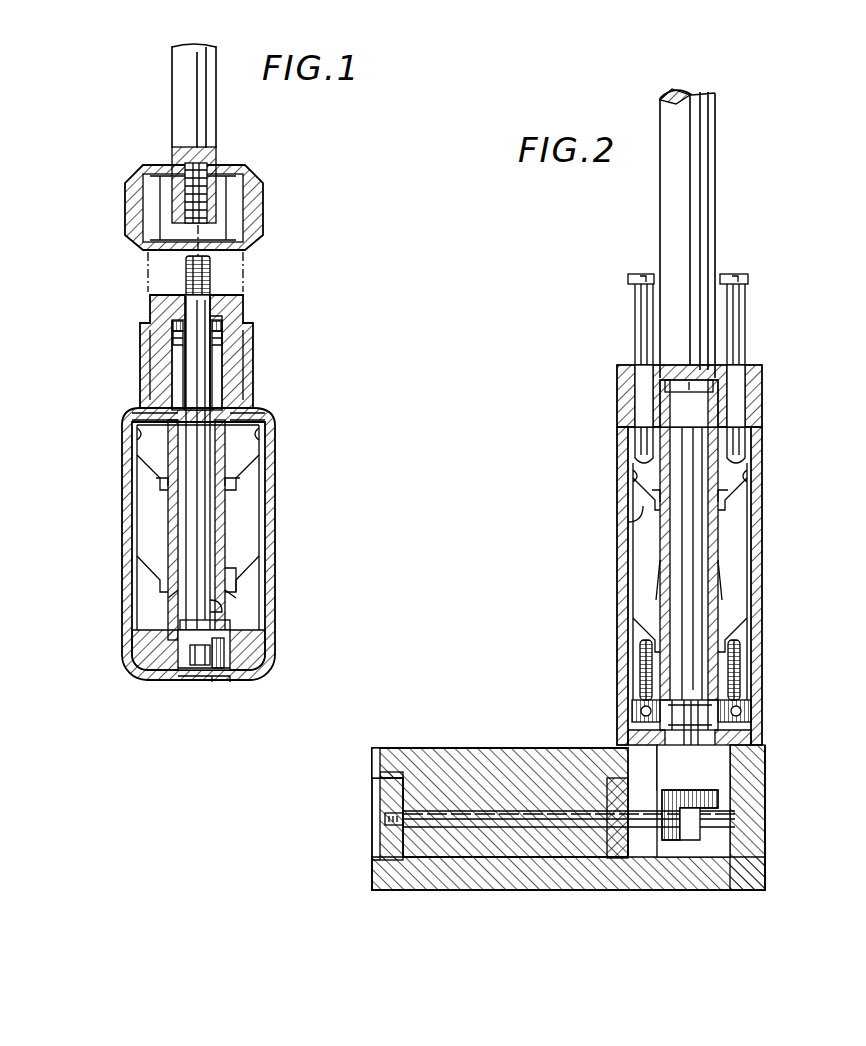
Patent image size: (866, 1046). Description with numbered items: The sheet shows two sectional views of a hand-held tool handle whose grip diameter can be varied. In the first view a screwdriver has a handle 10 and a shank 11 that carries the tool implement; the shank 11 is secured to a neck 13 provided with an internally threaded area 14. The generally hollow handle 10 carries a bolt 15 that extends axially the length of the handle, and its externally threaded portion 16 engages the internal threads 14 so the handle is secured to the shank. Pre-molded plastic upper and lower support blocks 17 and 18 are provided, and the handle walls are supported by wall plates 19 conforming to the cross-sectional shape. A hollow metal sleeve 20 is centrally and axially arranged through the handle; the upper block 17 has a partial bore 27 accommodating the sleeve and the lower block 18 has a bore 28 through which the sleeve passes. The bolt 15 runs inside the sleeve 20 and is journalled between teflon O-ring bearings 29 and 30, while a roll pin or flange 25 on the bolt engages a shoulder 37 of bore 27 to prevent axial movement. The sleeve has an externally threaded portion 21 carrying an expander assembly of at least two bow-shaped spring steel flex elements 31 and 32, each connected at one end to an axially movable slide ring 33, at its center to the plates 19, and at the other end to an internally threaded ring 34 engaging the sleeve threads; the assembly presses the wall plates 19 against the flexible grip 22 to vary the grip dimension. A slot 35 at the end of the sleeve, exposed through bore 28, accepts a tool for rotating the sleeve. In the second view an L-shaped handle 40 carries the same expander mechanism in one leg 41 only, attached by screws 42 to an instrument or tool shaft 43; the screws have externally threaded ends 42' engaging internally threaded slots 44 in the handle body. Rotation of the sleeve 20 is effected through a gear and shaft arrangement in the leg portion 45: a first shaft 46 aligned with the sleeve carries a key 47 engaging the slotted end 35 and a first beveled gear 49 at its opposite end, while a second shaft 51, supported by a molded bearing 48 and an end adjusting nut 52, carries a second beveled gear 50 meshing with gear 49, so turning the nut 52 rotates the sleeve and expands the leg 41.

In FIG. 1, the handle 10 is at (318, 369).
In FIG. 1, the shank 11 is at (188, 88).
In FIG. 1, the neck 13 is at (258, 205).
In FIG. 1, the internally threaded area 14 is at (208, 160).
In FIG. 1, the bolt 15 is at (200, 542).
In FIG. 1, the externally threaded portion 16 is at (210, 280).
In FIG. 1, the upper support block 17 is at (160, 378).
In FIG. 1, the lower support block 18 is at (255, 650).
In FIG. 1, the wall plates 19 is at (142, 428).
In FIG. 2, the wall plates 19 is at (640, 472).
In FIG. 1, the hollow metal sleeve 20 is at (170, 492).
In FIG. 2, the hollow metal sleeve 20 is at (720, 532).
In FIG. 1, the externally threaded portion 21 is at (168, 598).
In FIG. 2, the externally threaded portion 21 is at (720, 578).
In FIG. 1, the flexible grip 22 is at (130, 468).
In FIG. 2, the flexible grip 22 is at (764, 385).
In FIG. 1, the roll pin or flange 25 is at (178, 322).
In FIG. 1, the partial bore 27 is at (178, 336).
In FIG. 1, the bore 28 is at (222, 670).
In FIG. 1, the teflon O-ring bearing 29 is at (262, 432).
In FIG. 1, the teflon O-ring bearing 30 is at (236, 614).
In FIG. 1, the flex element 31 is at (170, 580).
In FIG. 2, the flex element 31 is at (650, 506).
In FIG. 1, the flex element 32 is at (258, 352).
In FIG. 2, the flex element 32 is at (736, 618).
In FIG. 1, the slide ring 33 is at (236, 458).
In FIG. 2, the slide ring 33 is at (725, 480).
In FIG. 1, the internally threaded ring 34 is at (236, 580).
In FIG. 1, the slot 35 is at (195, 660).
In FIG. 2, the slot 35 is at (690, 705).
In FIG. 1, the shoulder 37 is at (222, 318).
In FIG. 2, the L-shaped handle 40 is at (520, 700).
In FIG. 2, the leg 41 is at (604, 566).
In FIG. 2, the screws 42 is at (685, 345).
In FIG. 2, the externally threaded ends 42' is at (692, 672).
In FIG. 2, the instrument or tool shaft 43 is at (693, 120).
In FIG. 2, the internally threaded slots 44 is at (640, 720).
In FIG. 2, the leg portion 45 is at (505, 768).
In FIG. 2, the first shaft 46 is at (728, 778).
In FIG. 2, the key 47 is at (700, 752).
In FIG. 2, the molded bearing 48 is at (600, 838).
In FIG. 2, the first beveled gear 49 is at (692, 818).
In FIG. 2, the second beveled gear 50 is at (674, 840).
In FIG. 2, the second shaft 51 is at (428, 812).
In FIG. 2, the end adjusting nut 52 is at (375, 808).